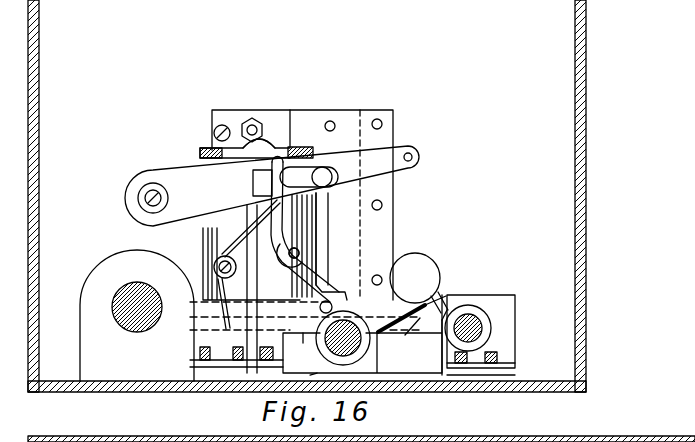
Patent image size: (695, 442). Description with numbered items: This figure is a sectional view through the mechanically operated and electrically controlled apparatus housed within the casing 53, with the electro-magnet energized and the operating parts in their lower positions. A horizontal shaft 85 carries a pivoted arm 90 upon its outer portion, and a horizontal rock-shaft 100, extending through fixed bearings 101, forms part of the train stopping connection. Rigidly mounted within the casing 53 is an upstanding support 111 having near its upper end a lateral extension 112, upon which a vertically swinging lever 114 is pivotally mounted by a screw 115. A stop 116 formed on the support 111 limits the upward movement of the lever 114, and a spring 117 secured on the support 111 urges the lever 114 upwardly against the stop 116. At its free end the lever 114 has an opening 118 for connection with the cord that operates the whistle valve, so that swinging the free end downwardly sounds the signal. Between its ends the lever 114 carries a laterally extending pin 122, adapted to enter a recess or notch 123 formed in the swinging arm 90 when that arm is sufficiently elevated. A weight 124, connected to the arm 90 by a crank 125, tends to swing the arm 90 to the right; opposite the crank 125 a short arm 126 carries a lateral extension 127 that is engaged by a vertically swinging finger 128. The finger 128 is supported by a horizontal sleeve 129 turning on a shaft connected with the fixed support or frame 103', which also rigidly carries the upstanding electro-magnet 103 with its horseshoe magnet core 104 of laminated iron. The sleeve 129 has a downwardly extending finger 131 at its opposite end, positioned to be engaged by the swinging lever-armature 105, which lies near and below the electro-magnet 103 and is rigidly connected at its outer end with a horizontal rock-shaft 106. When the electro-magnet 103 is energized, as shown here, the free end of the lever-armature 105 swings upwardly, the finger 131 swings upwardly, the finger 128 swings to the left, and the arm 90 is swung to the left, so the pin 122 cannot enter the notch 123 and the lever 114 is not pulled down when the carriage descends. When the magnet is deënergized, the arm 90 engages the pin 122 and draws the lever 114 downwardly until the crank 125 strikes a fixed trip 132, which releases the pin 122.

The casing 53 is at (585, 106).
The horizontal shaft 85 is at (362, 348).
The pivoted arm 90 is at (291, 172).
The horizontal rock-shaft 100 is at (147, 330).
The fixed bearings 101 is at (137, 315).
The electro-magnet 103 is at (337, 239).
The fixed support or frame 103' is at (484, 321).
The horseshoe magnet core 104 is at (397, 133).
The lever-armature 105 is at (418, 328).
The horizontal rock-shaft 106 is at (476, 332).
The upstanding support 111 is at (212, 238).
The lateral extension 112 is at (178, 163).
The vertically swinging lever 114 is at (272, 201).
The screw 115 is at (143, 199).
The stop 116 is at (270, 147).
The spring 117 is at (257, 243).
The opening 118 is at (413, 156).
The laterally extending pin 122 is at (327, 170).
The recess or notch 123 is at (322, 246).
The weight 124 is at (421, 262).
The crank 125 is at (405, 316).
The short arm 126 is at (333, 374).
The lateral extension 127 is at (316, 292).
The vertically swinging finger 128 is at (304, 248).
The horizontal sleeve 129 is at (320, 308).
The downwardly extending finger 131 is at (300, 254).
The fixed trip 132 is at (447, 300).